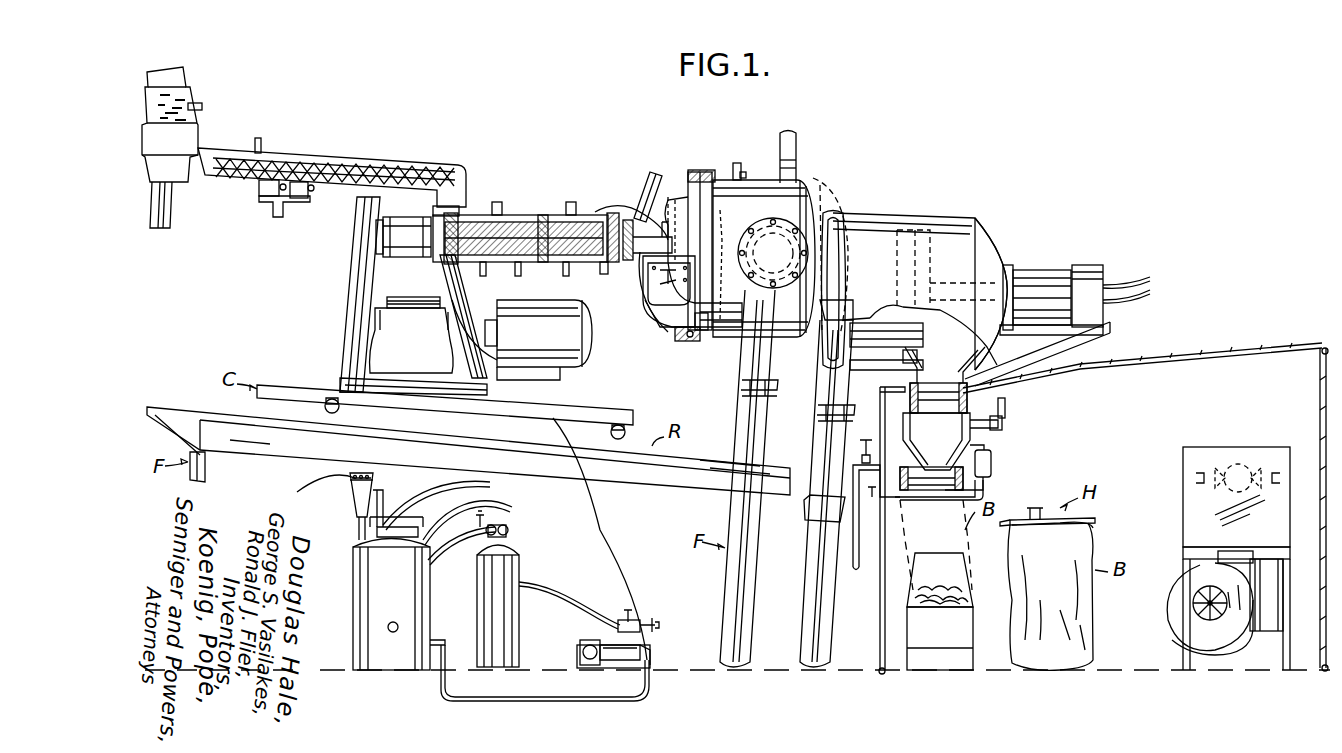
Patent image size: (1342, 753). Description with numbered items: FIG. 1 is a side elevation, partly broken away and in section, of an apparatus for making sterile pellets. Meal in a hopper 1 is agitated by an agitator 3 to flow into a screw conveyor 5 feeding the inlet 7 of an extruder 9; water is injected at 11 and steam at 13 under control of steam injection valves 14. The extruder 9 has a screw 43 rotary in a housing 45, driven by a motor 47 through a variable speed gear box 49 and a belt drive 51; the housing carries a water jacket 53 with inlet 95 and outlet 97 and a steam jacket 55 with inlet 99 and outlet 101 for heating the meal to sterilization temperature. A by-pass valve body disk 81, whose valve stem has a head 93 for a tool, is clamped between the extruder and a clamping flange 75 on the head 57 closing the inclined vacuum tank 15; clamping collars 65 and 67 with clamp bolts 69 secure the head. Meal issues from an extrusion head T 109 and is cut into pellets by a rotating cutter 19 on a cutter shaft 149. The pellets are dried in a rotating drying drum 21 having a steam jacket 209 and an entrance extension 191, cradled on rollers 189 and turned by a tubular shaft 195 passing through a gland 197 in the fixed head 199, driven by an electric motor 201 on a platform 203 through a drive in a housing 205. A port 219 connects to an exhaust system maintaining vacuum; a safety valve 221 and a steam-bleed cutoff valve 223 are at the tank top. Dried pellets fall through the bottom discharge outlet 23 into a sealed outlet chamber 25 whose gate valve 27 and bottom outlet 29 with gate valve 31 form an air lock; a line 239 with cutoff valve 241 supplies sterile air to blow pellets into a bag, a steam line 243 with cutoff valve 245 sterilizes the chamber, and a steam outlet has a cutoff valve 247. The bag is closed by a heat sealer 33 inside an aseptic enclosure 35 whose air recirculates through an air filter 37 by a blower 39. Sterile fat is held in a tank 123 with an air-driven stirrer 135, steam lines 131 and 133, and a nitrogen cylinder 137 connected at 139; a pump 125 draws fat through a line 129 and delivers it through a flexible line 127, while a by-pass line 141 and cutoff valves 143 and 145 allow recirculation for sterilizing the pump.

The hopper 1 is at (186, 78).
The agitator 3 is at (203, 106).
The screw conveyor 5 is at (305, 158).
The inlet 7 is at (433, 211).
The extruder 9 is at (434, 249).
The water injection point 11 is at (255, 142).
The steam injection point 13 is at (273, 208).
The steam injection valves 14 is at (257, 192).
The tank 15 is at (900, 214).
The rotating cutter 19 is at (660, 290).
The drying drum 21 is at (815, 182).
The bottom discharge outlet 23 is at (966, 380).
The outlet chamber 25 is at (932, 452).
The valve 27 is at (940, 410).
The bottom outlet 29 is at (983, 493).
The valve 31 is at (945, 491).
The heat sealer 33 is at (1008, 526).
The enclosure 35 is at (880, 628).
The air filter 37 is at (1248, 452).
The blower 39 is at (1175, 625).
The screw 43 is at (516, 264).
The housing 45 is at (540, 216).
The motor 47 is at (523, 336).
The variable speed gear box 49 is at (418, 350).
The belt drive 51 is at (357, 296).
The water jacket 53 is at (455, 214).
The steam jacket 55 is at (546, 218).
The head 57 is at (654, 320).
The clamping collar 65 is at (668, 176).
The clamping collar 67 is at (714, 208).
The clamp bolts 69 is at (688, 173).
The clamping flange 75 is at (628, 260).
The disk 81 is at (613, 213).
The head 93 is at (606, 274).
The inlet 95 is at (497, 202).
The outlet 97 is at (480, 266).
The inlet 99 is at (571, 202).
The outlet 101 is at (563, 268).
The T 109 is at (690, 256).
The tank 123 is at (425, 603).
The pump 125 is at (586, 668).
The flexible line 127 is at (604, 197).
The line 129 is at (514, 701).
The steam line 131 is at (424, 503).
The steam line 133 is at (476, 502).
The air-driven stirrer 135 is at (352, 500).
The nitrogen cylinder 137 is at (508, 613).
The nitrogen connection 139 is at (465, 538).
The by-pass line 141 is at (555, 591).
The cutoff valve 143 is at (657, 622).
The cutoff valve 145 is at (625, 620).
The cutter shaft 149 is at (670, 270).
The rollers 189 is at (710, 320).
The extension 191 is at (668, 318).
The tubular shaft 195 is at (1040, 310).
The gland 197 is at (1008, 265).
The head 199 is at (990, 238).
The electric motor 201 is at (1040, 275).
The platform 203 is at (1105, 328).
The housing 205 is at (1088, 270).
The steam jacket 209 is at (875, 370).
The port 219 is at (760, 244).
The safety valve 221 is at (797, 140).
The cutoff valve 223 is at (733, 167).
The line 239 is at (990, 480).
The cutoff valve 241 is at (992, 452).
The steam line 243 is at (1002, 425).
The cutoff valve 245 is at (1005, 412).
The cutoff valve 247 is at (866, 440).